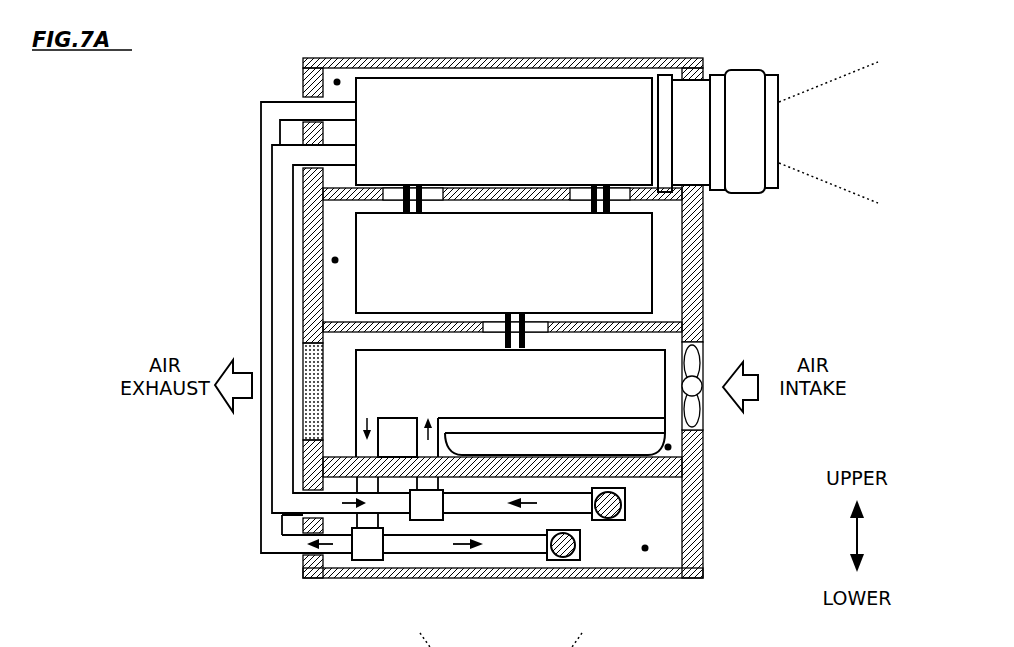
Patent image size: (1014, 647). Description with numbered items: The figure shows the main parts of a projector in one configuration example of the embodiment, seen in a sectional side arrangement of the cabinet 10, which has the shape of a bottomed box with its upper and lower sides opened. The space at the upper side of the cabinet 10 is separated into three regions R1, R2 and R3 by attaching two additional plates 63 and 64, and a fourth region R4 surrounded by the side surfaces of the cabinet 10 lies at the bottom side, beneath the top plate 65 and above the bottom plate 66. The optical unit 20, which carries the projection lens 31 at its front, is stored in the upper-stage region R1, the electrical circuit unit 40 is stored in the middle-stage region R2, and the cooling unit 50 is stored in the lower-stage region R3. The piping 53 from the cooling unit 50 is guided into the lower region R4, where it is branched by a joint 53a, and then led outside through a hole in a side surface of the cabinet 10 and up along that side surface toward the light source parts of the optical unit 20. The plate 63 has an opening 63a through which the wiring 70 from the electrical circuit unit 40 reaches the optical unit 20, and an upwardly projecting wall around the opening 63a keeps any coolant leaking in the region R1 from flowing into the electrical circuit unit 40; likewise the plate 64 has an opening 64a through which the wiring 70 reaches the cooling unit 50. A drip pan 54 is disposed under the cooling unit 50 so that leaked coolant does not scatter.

The cabinet 10 is at (303, 80).
The optical unit 20 is at (563, 103).
The projection lens 31 is at (747, 77).
The electrical circuit unit 40 is at (625, 263).
The cooling unit 50 is at (632, 368).
The piping 53 is at (262, 278).
The joint 53a is at (550, 562).
The drip pan 54 is at (513, 437).
The plate 63 is at (520, 187).
The opening 63a is at (430, 187).
The plate 64 is at (412, 319).
The opening 64a is at (537, 322).
The top plate 65 is at (505, 59).
The bottom plate 66 is at (352, 580).
The wiring 70 is at (410, 187).
The region R1 is at (337, 82).
The region R2 is at (335, 260).
The region R3 is at (668, 447).
The region R4 is at (645, 548).